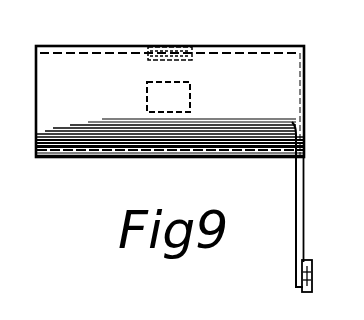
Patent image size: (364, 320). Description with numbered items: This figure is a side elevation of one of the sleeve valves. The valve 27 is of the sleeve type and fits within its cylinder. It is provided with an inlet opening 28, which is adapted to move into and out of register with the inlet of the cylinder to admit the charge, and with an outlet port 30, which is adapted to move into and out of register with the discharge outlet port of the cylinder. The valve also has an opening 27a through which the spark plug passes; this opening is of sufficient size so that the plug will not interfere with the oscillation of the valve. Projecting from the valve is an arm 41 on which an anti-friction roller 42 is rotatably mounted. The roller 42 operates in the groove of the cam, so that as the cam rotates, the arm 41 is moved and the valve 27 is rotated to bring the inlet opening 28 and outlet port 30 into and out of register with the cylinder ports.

The inlet opening 28 is at (163, 47).
The opening in the valve 27a is at (181, 97).
The valve 27 is at (250, 121).
The outlet port 30 is at (173, 157).
The arm 41 is at (298, 223).
The anti-friction roller 42 is at (312, 289).